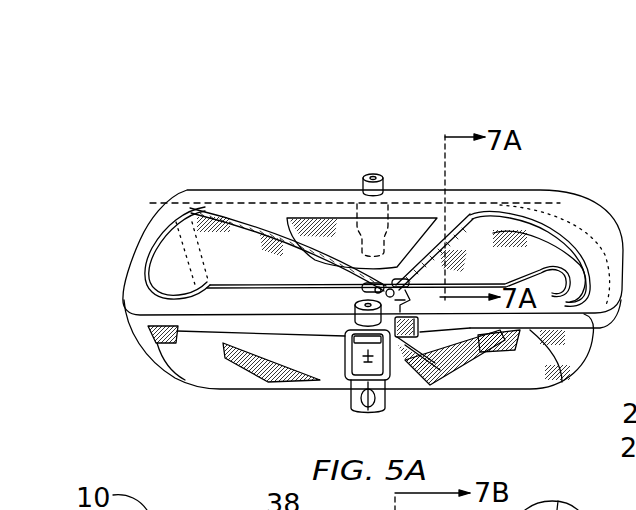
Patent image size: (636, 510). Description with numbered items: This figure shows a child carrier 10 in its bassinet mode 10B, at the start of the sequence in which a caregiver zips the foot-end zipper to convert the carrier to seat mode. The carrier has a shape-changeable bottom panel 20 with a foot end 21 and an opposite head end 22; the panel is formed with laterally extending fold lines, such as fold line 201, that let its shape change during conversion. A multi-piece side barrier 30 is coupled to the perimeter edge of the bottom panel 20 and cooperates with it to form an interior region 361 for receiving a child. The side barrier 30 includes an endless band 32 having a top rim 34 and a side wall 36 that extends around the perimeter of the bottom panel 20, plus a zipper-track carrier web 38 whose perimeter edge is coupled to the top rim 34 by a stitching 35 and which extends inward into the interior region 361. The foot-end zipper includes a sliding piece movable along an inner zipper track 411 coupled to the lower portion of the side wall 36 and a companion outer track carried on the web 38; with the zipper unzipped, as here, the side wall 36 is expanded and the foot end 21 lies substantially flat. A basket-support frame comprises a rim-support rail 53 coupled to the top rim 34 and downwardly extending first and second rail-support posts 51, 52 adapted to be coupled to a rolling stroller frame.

The child carrier 10 is at (550, 173).
The bassinet mode 10B is at (177, 192).
The shape-changeable bottom panel 20 is at (260, 303).
The foot end 21 is at (542, 300).
The head end 22 is at (278, 297).
The side barrier 30 is at (583, 240).
The endless band 32 is at (112, 424).
The top rim 34 is at (183, 322).
The stitching 35 is at (128, 284).
The side wall 36 is at (207, 355).
The zipper-track carrier web 38 is at (293, 207).
The first rail-support post 51 is at (390, 402).
The second rail-support post 52 is at (371, 170).
The rim-support rail 53 is at (251, 203).
The fold line 201 is at (398, 298).
The interior region 361 is at (510, 258).
The inner zipper track 411 is at (415, 258).